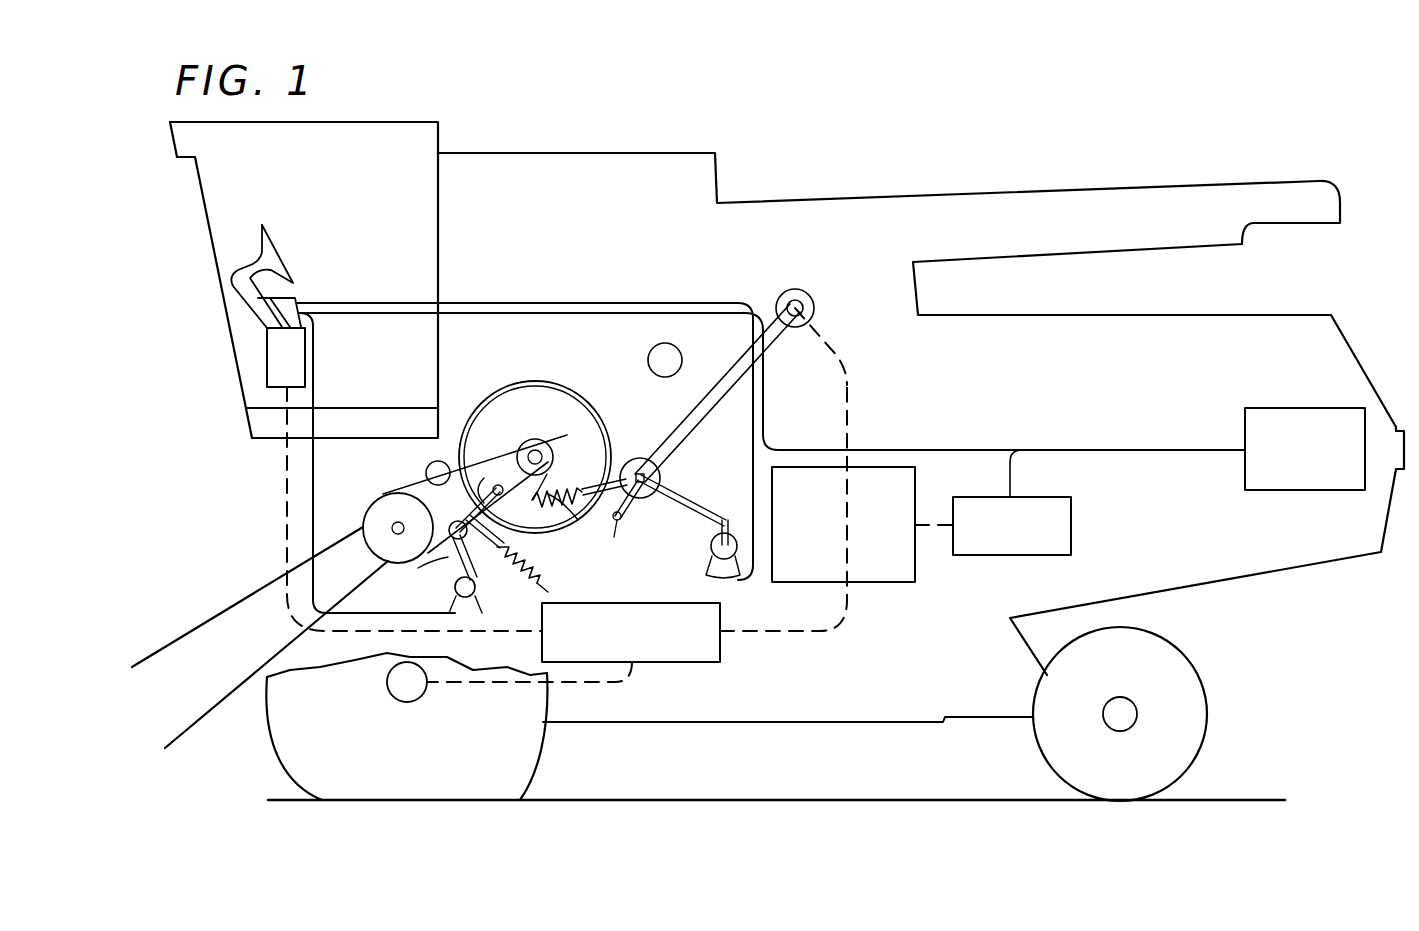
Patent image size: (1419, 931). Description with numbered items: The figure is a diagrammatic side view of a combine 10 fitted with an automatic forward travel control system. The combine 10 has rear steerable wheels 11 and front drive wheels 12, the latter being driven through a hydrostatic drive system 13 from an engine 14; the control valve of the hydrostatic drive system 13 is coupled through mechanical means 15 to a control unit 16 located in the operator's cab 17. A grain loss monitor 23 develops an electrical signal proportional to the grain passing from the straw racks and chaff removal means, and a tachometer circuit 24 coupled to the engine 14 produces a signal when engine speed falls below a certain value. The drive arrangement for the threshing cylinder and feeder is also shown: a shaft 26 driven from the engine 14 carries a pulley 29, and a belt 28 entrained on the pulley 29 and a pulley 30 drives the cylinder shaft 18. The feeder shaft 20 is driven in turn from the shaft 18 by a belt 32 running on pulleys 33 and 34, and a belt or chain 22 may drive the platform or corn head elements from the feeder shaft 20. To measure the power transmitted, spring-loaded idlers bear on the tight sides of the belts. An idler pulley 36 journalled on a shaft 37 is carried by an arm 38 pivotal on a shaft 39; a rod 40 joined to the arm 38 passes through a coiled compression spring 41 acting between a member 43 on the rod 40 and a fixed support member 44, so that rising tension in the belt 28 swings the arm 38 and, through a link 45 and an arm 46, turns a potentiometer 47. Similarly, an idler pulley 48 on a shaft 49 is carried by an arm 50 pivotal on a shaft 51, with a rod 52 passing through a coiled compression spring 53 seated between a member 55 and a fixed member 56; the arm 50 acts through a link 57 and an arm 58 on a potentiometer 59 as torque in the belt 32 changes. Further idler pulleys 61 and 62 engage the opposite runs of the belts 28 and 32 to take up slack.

The combine 10 is at (1229, 163).
The rear steerable wheels 11 is at (1192, 698).
The front drive wheels 12 is at (532, 705).
The hydrostatic drive system 13 is at (693, 663).
The engine 14 is at (890, 583).
The mechanical means 15 is at (287, 494).
The control unit 16 is at (267, 345).
The operator's cab 17 is at (216, 260).
The shaft 18 is at (574, 432).
The feeder shaft 20 is at (395, 524).
The belt or chain 22 is at (238, 603).
The grain loss monitor 23 is at (1305, 492).
The tachometer circuit 24 is at (1071, 550).
The shaft 26 is at (806, 309).
The belt 28 is at (720, 398).
The pulley 29 is at (808, 300).
The pulley 30 is at (522, 396).
The belt 32 is at (505, 448).
The pulley 33 is at (539, 440).
The pulley 34 is at (363, 516).
The idler pulley 36 is at (656, 464).
The shaft 37 is at (642, 490).
The arm 38 is at (628, 509).
The shaft 39 is at (617, 526).
The rod 40 is at (592, 484).
The coiled compression spring 41 is at (578, 520).
The member 43 is at (541, 510).
The fixed support member 44 is at (568, 481).
The link 45 is at (697, 495).
The arm 46 is at (712, 546).
The potentiometer 47 is at (705, 562).
The idler pulley 48 is at (458, 520).
The shaft 49 is at (434, 536).
The arm 50 is at (487, 465).
The shaft 51 is at (506, 474).
The rod 52 is at (508, 533).
The coiled compression spring 53 is at (530, 561).
The member 55 is at (550, 591).
The fixed member 56 is at (486, 567).
The link 57 is at (418, 568).
The arm 58 is at (476, 593).
The potentiometer 59 is at (452, 594).
The idler pulley 61 is at (648, 358).
The idler pulley 62 is at (428, 467).